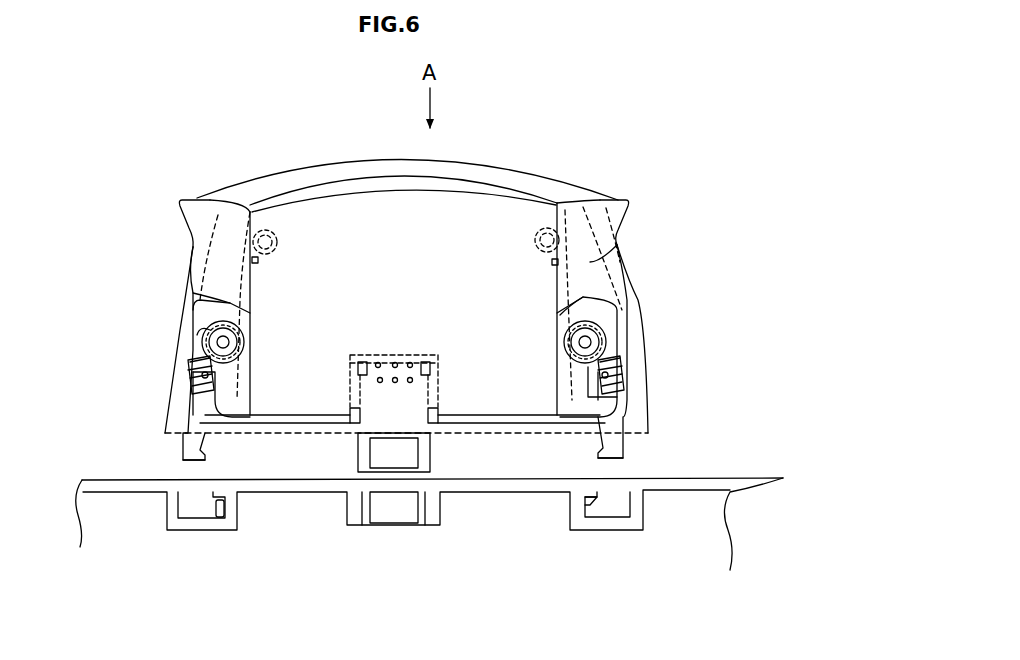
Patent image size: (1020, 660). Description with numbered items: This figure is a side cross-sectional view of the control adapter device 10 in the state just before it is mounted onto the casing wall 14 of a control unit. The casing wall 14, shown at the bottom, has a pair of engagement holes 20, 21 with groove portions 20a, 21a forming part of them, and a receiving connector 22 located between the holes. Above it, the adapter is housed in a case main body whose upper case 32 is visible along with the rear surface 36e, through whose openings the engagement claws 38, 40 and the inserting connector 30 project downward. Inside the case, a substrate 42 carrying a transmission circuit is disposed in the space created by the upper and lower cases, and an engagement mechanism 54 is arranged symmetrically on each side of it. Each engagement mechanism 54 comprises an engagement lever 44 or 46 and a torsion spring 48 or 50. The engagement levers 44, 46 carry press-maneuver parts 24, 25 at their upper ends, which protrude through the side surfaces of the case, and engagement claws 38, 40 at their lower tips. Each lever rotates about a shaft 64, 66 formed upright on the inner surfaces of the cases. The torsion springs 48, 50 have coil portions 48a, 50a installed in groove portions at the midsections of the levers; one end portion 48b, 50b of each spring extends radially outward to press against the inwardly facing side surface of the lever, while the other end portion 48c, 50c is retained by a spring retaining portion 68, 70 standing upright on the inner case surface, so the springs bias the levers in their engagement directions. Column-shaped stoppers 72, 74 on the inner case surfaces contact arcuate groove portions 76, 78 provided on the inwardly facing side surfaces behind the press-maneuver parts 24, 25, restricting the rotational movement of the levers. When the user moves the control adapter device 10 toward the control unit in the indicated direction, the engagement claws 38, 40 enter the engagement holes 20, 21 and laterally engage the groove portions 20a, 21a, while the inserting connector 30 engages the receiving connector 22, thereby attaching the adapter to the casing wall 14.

The control adapter device 10 is at (470, 160).
The casing wall 14 is at (700, 478).
The engagement hole 20 is at (190, 518).
The groove portion 20a is at (222, 518).
The engagement hole 21 is at (630, 518).
The groove portion 21a is at (595, 497).
The receiving connector 22 is at (395, 523).
The press-maneuver part 24 is at (187, 203).
The press-maneuver part 25 is at (630, 205).
The inserting connector 30 is at (430, 458).
The upper case 32 is at (520, 182).
The rear surface 36e is at (520, 437).
The engagement claw 38 is at (206, 458).
The engagement claw 40 is at (600, 454).
The substrate 42 is at (380, 202).
The engagement lever 44 is at (205, 198).
The engagement lever 46 is at (612, 198).
The torsion spring 48 is at (221, 314).
The coil portion 48a is at (242, 343).
The one end portion 48b is at (258, 262).
The other end portion 48c is at (190, 405).
The torsion spring 50 is at (618, 322).
The coil portion 50a is at (570, 343).
The one end portion 50b is at (553, 263).
The other end portion 50c is at (598, 380).
The engagement mechanism 54 is at (155, 278).
The shaft 64 is at (210, 340).
The shaft 66 is at (607, 307).
The spring retaining portion 68 is at (188, 378).
The spring retaining portion 70 is at (625, 380).
The stopper 72 is at (277, 237).
The stopper 74 is at (535, 240).
The arcuate groove portion 76 is at (250, 262).
The arcuate groove portion 78 is at (620, 240).